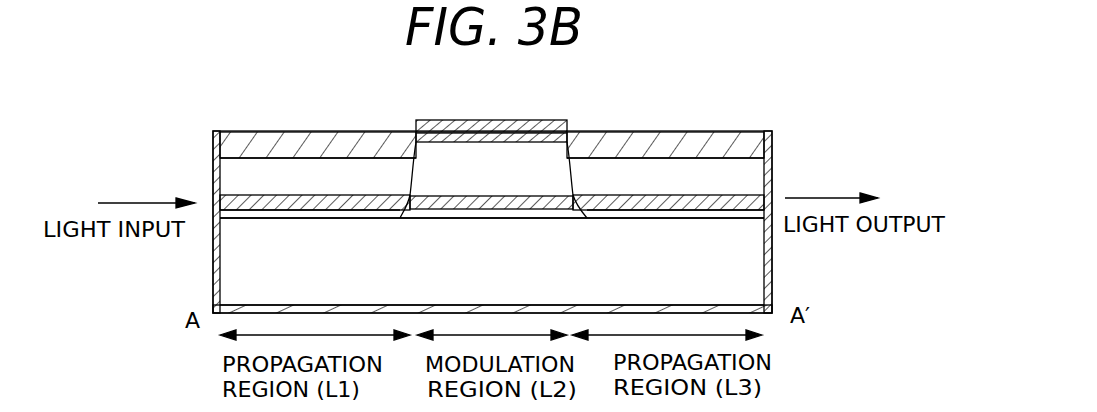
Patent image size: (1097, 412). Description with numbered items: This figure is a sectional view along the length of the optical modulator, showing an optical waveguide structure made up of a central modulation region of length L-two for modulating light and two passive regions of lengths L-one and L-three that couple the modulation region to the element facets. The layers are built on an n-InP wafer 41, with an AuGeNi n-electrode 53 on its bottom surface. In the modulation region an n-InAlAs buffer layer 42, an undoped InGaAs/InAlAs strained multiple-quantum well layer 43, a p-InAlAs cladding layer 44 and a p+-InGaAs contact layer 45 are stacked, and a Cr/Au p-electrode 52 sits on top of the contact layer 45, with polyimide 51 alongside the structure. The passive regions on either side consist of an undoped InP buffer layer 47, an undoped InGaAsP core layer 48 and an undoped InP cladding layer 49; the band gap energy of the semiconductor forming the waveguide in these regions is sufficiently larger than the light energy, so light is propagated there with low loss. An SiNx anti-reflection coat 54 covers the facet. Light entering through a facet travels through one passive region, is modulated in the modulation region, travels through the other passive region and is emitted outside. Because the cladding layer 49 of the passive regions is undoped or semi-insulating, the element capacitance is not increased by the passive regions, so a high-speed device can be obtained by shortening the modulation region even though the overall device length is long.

The n-InP wafer 41 is at (752, 285).
The n-InAlAs buffer layer 42 is at (438, 212).
The undoped InGaAs/InAlAs strained multiple-quantum well layer 43 is at (531, 203).
The p-InAlAs cladding layer 44 is at (555, 158).
The p+-InGaAs contact layer 45 is at (540, 130).
The undoped InP buffer layer 47 is at (253, 213).
The undoped InGaAsP core layer 48 is at (340, 203).
The undoped InP cladding layer 49 is at (755, 168).
The polyimide 51 is at (738, 133).
The Cr/Au p-electrode 52 is at (460, 122).
The AuGeNi n-electrode 53 is at (757, 312).
The SiNx anti-reflection coat 54 is at (772, 138).